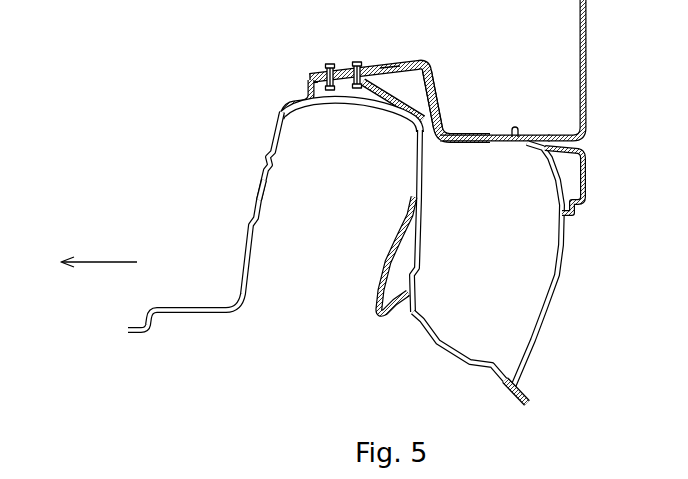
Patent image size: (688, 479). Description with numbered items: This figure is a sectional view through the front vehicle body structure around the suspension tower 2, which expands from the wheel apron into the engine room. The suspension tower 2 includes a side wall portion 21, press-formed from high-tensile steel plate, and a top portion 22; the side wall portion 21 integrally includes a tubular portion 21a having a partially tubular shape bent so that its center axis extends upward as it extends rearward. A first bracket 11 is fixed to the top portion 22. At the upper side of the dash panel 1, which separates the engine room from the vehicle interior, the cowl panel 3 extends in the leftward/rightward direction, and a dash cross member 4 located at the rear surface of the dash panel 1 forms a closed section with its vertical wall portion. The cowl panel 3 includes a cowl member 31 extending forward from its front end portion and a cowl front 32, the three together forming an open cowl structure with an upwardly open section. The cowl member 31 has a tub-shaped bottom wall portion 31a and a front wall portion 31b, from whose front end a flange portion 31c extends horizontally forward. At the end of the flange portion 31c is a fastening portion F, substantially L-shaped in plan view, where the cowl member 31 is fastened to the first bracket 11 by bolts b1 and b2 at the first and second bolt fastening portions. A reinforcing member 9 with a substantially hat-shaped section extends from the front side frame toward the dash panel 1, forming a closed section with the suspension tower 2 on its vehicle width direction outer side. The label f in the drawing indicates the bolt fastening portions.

The dash panel 1 is at (561, 284).
The suspension tower 2 is at (290, 215).
The cowl panel 3 is at (584, 40).
The dash cross member 4 is at (585, 173).
The reinforcing member 9 is at (382, 279).
The first bracket 11 is at (307, 90).
The side wall portion 21 is at (247, 254).
The tubular portion 21a is at (267, 199).
The top portion 22 is at (345, 108).
The cowl member 31 is at (428, 61).
The bottom wall portion 31a is at (488, 134).
The front wall portion 31b is at (434, 83).
The flange portion 31c is at (312, 68).
The cowl front 32 is at (433, 140).
The bolt b1 is at (357, 63).
The bolt b2 is at (329, 65).
The fastening portion f is at (380, 62).
The fastening portion F is at (100, 262).